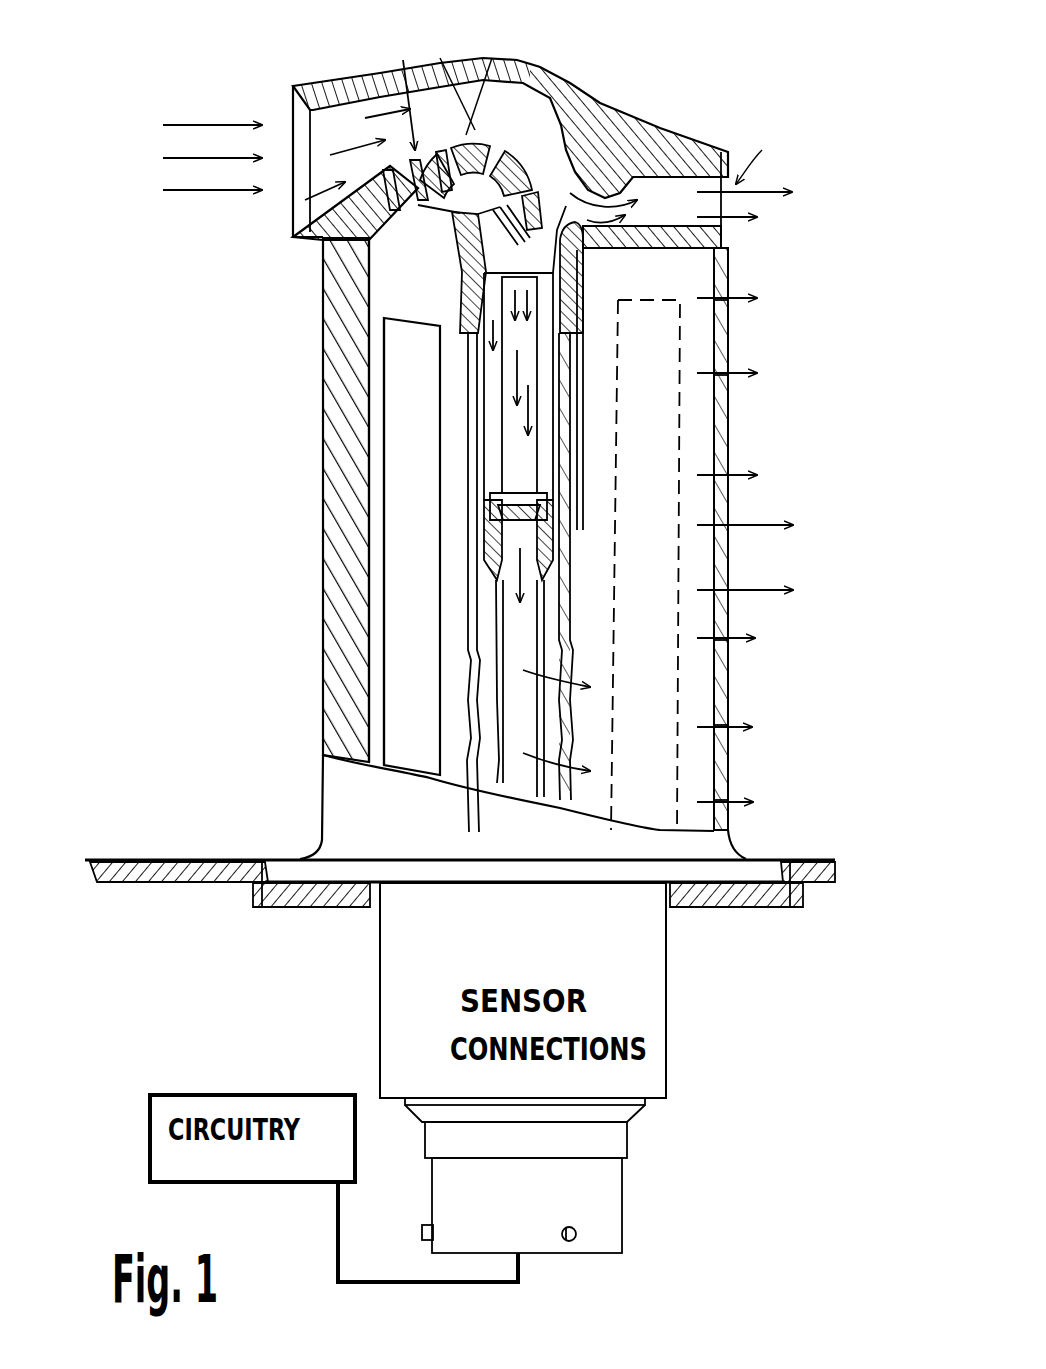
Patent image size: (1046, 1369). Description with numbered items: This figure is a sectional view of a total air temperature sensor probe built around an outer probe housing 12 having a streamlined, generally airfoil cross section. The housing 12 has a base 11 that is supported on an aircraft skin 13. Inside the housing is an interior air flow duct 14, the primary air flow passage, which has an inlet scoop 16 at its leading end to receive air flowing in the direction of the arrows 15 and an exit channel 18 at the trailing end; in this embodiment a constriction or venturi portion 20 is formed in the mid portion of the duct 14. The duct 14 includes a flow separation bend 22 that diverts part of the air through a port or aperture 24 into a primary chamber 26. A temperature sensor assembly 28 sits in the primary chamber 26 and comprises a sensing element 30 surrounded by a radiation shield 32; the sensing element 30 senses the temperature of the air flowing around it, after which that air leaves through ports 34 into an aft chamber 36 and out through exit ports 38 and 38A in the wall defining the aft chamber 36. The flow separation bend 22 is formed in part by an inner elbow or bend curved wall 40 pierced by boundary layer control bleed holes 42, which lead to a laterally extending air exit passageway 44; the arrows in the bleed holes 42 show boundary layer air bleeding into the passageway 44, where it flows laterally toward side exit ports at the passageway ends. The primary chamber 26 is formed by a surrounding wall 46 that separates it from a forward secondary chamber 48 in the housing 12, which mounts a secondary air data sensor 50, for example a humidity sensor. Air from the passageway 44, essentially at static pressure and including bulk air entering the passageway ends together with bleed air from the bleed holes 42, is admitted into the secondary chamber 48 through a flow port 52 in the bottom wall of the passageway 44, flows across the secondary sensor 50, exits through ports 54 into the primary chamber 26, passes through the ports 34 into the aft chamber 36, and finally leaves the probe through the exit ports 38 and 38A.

The base 11 is at (330, 883).
The outer probe housing 12 is at (326, 466).
The aircraft skin 13 is at (182, 882).
The interior air flow duct 14 is at (469, 108).
The arrows 15 is at (162, 172).
The inlet scoop 16 is at (290, 120).
The exit channel 18 is at (670, 200).
The constriction or venturi portion 20 is at (606, 214).
The flow separation bend 22 is at (508, 126).
The port or aperture 24 is at (558, 210).
The primary chamber 26 is at (560, 398).
The temperature sensor assembly 28 is at (530, 348).
The sensing element 30 is at (523, 465).
The radiation shield 32 is at (487, 430).
The ports 34 is at (570, 745).
The aft chamber 36 is at (693, 702).
The exit port 38 is at (717, 650).
The exit port 38A is at (724, 371).
The inner elbow or bend curved wall 40 is at (500, 130).
The boundary layer control bleed holes 42 is at (516, 120).
The laterally extending air exit passageway 44 is at (440, 215).
The surrounding wall 46 is at (477, 537).
The forward secondary chamber 48 is at (377, 433).
The secondary air data sensor 50 is at (445, 527).
The flow port 52 is at (420, 215).
The ports 54 is at (470, 690).